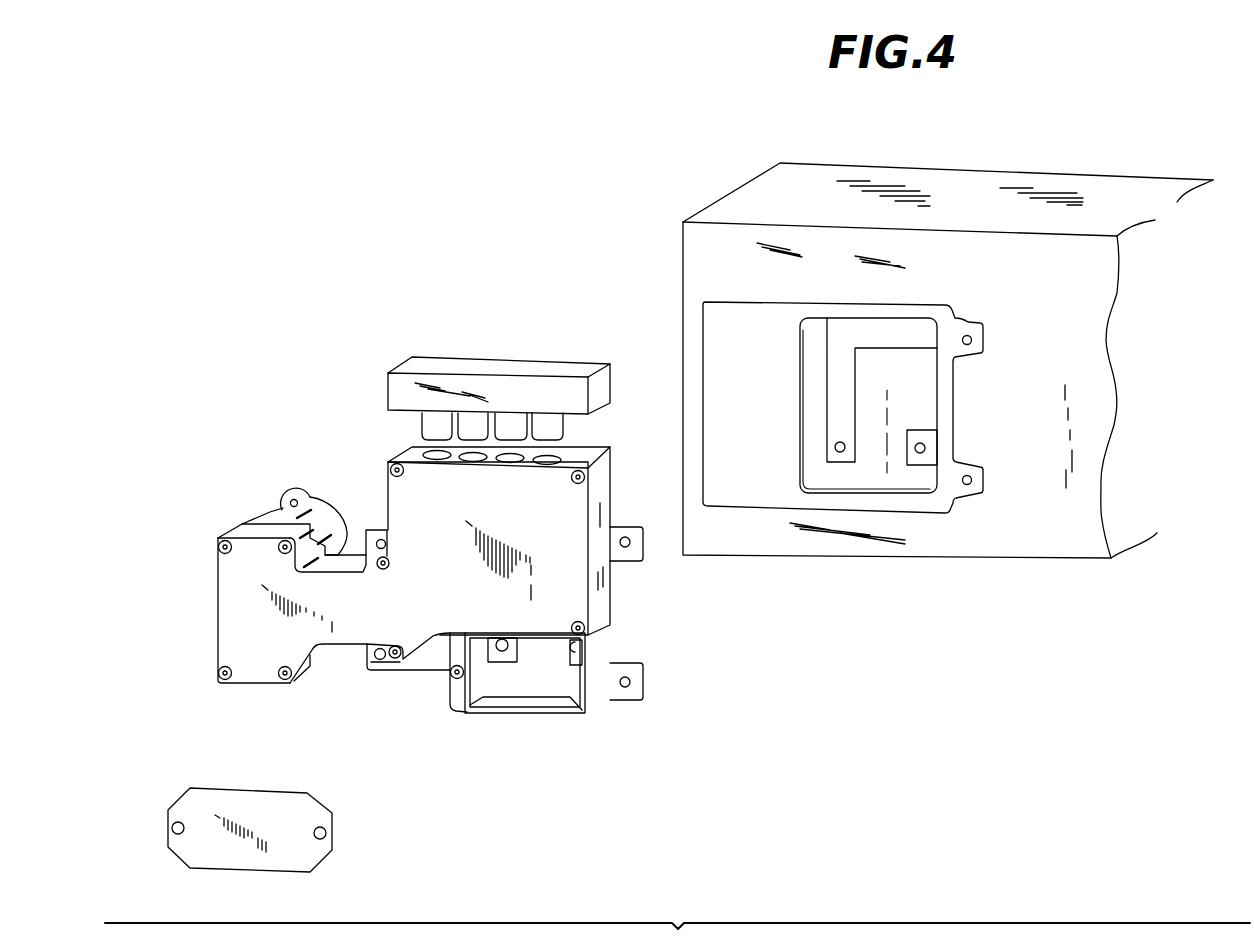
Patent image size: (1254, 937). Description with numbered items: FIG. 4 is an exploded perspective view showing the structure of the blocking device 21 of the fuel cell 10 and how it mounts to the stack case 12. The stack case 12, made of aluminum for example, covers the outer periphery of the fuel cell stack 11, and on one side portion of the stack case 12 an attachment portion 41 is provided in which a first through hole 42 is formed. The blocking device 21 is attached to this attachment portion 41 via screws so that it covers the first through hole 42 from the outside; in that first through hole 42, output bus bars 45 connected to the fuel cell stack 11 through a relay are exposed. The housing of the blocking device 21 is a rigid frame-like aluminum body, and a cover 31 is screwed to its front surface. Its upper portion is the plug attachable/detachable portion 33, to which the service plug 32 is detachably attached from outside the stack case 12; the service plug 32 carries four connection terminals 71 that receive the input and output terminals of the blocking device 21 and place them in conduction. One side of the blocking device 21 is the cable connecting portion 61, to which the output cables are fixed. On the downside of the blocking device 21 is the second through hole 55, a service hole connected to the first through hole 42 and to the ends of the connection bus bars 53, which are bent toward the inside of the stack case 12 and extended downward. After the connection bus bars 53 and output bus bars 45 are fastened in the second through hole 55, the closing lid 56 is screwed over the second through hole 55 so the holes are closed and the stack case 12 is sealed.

The fuel cell 10 is at (645, 135).
The fuel cell stack 11 is at (910, 383).
The stack case 12 is at (802, 177).
The blocking device 21 is at (338, 670).
The cover 31 is at (243, 622).
The service plug 32 is at (447, 365).
The plug attachable/detachable portion 33 is at (423, 477).
The attachment portion 41 is at (760, 485).
The first through hole 42 is at (887, 322).
The output bus bars 45 is at (842, 415).
The connection bus bars 53 is at (507, 655).
The second through hole 55 is at (502, 685).
The closing lid 56 is at (315, 852).
The cable connecting portion 61 is at (272, 513).
The connection terminals 71 is at (552, 420).